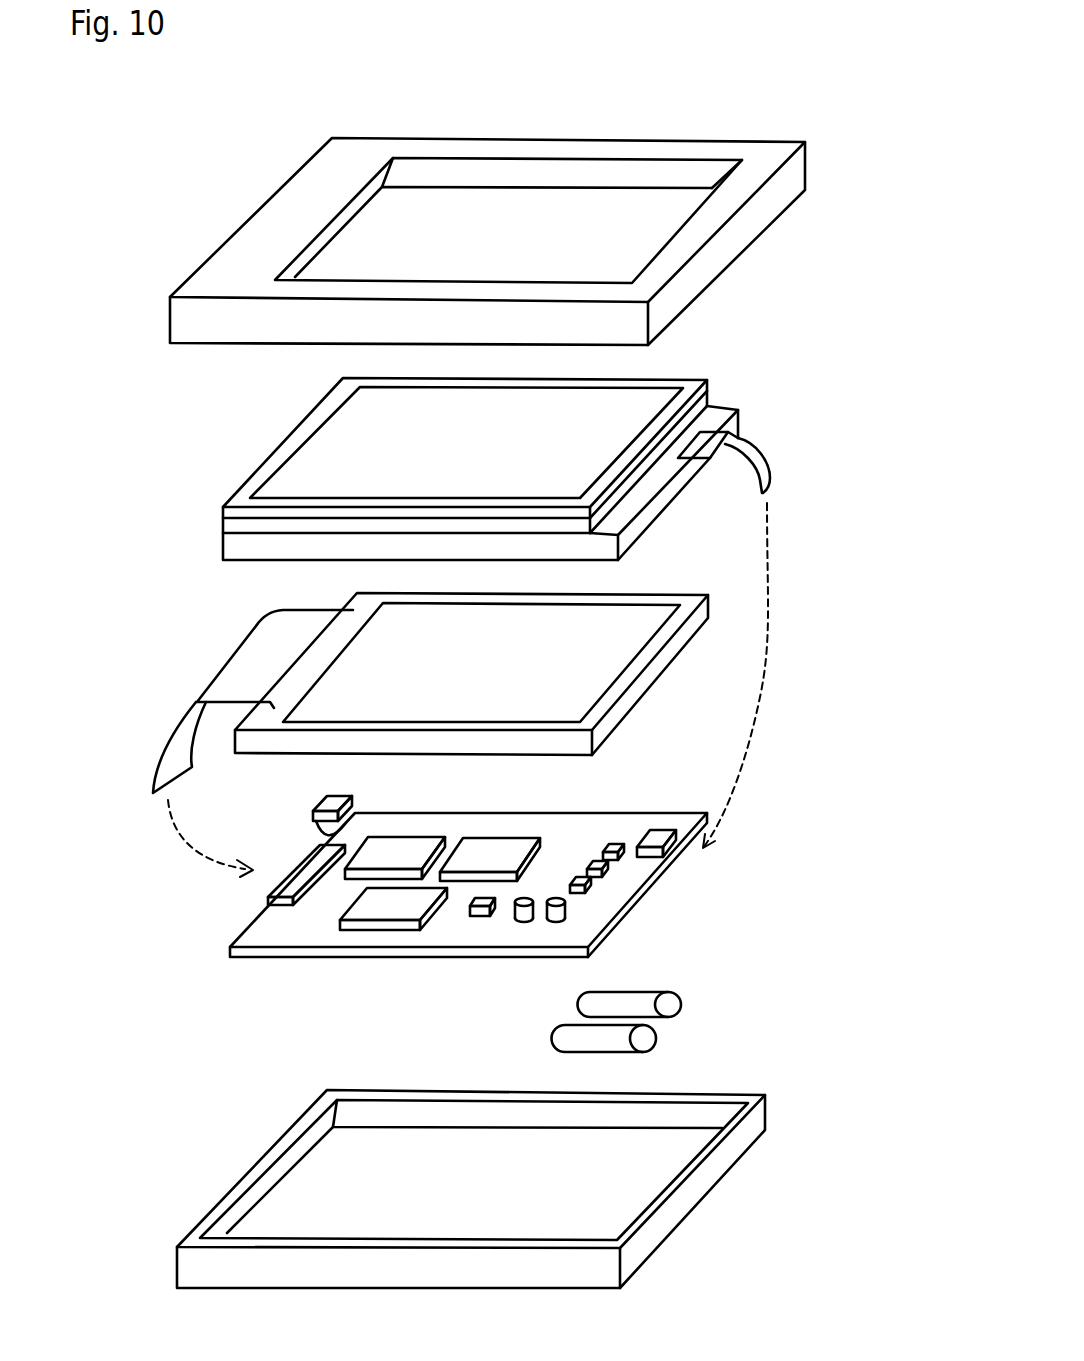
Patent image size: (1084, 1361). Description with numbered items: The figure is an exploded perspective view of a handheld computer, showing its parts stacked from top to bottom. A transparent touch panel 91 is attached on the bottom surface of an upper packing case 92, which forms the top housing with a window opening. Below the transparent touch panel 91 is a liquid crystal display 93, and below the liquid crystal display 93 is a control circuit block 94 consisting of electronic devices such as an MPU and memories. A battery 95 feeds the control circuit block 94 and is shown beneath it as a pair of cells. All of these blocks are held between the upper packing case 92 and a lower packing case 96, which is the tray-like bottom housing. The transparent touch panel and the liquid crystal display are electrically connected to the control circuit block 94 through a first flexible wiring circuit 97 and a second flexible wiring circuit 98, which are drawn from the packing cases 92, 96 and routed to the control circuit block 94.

The transparent touch panel 91 is at (738, 408).
The upper packing case 92 is at (775, 195).
The liquid crystal display 93 is at (693, 630).
The control circuit block 94 is at (660, 880).
The battery 95 is at (658, 1038).
The lower packing case 96 is at (740, 1162).
The first flexible wiring circuit 97 is at (768, 461).
The second flexible wiring circuit 98 is at (235, 667).